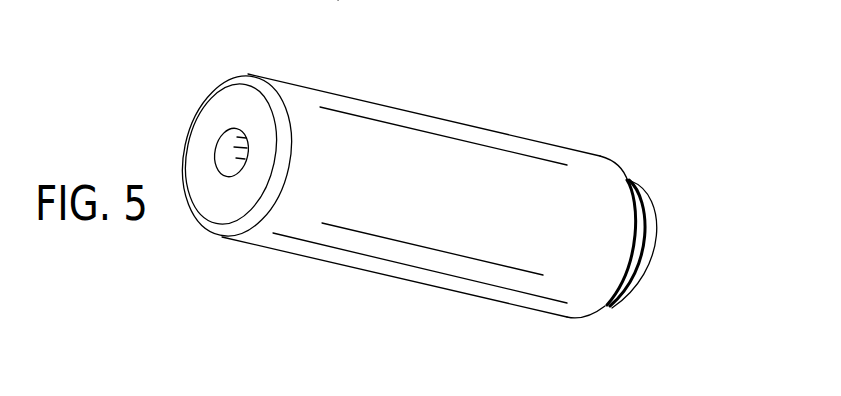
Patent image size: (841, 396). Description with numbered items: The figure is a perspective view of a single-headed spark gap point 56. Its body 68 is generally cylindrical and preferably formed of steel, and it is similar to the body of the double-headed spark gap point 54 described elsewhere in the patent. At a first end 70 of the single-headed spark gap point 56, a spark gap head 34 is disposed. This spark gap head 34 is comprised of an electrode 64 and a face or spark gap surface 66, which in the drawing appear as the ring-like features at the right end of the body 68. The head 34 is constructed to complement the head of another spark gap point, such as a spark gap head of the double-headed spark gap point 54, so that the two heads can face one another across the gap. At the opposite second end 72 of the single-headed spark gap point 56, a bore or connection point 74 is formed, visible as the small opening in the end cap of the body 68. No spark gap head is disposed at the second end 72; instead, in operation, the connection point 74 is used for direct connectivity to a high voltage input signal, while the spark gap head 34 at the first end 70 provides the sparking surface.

The spark gap head 34 is at (667, 193).
The double-headed spark gap point 54 is at (338, 0).
The single-headed spark gap point 56 is at (475, 98).
The electrode 64 is at (606, 308).
The spark gap surface 66 is at (682, 270).
The body 68 is at (389, 275).
The first end 70 is at (633, 152).
The second end 72 is at (190, 75).
The connection point 74 is at (214, 152).